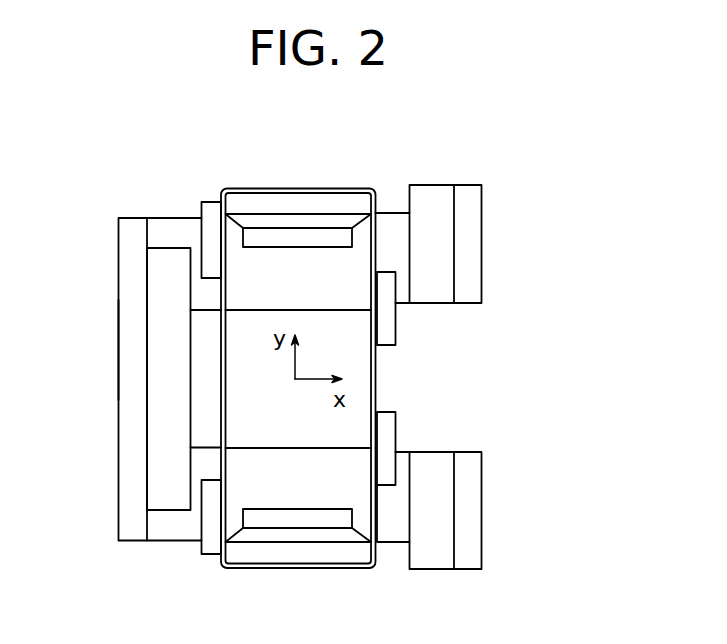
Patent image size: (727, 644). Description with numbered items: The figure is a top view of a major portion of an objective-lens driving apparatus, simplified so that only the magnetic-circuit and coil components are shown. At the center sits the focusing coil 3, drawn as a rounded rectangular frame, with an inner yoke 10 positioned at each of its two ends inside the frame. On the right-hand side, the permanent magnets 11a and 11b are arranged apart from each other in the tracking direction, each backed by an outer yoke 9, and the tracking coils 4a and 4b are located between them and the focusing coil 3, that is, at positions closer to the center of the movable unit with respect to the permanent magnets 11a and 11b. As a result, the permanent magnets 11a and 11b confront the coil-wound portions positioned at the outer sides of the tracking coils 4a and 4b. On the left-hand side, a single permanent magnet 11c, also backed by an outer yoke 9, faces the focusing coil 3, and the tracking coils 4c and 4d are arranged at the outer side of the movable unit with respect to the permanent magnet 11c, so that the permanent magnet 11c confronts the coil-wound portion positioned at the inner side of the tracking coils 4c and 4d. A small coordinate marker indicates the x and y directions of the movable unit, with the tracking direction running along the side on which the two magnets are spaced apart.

The focusing coil 3 is at (238, 188).
The tracking coil 4a is at (388, 429).
The tracking coil 4b is at (390, 327).
The tracking coil 4c is at (212, 545).
The tracking coil 4d is at (210, 201).
The outer yoke 9 is at (473, 263).
The inner yoke 10 is at (297, 237).
The permanent magnet 11a is at (448, 547).
The permanent magnet 11b is at (430, 202).
The permanent magnet 11c is at (163, 288).